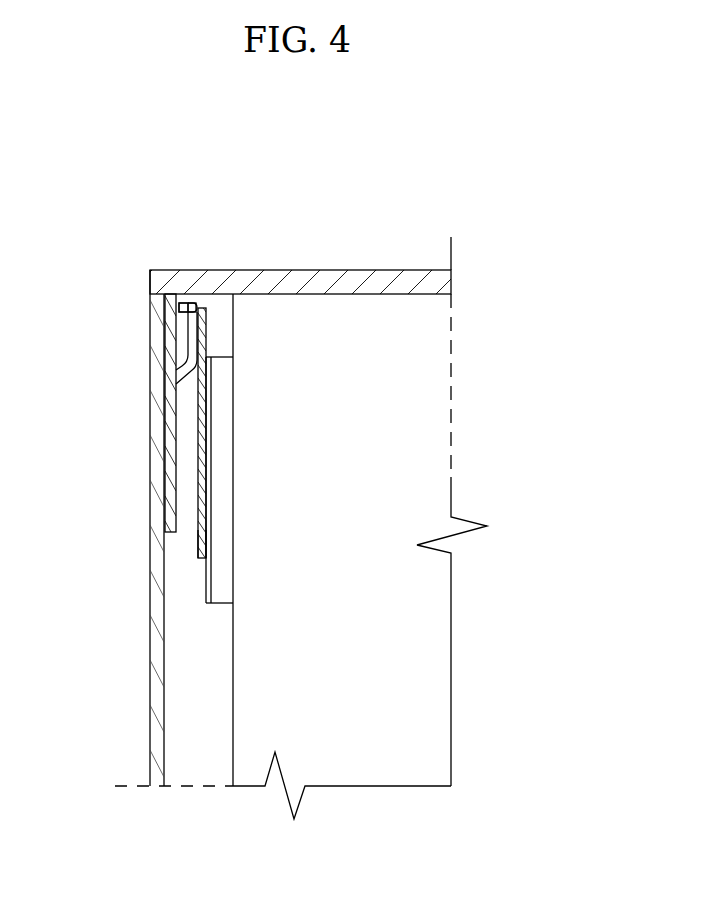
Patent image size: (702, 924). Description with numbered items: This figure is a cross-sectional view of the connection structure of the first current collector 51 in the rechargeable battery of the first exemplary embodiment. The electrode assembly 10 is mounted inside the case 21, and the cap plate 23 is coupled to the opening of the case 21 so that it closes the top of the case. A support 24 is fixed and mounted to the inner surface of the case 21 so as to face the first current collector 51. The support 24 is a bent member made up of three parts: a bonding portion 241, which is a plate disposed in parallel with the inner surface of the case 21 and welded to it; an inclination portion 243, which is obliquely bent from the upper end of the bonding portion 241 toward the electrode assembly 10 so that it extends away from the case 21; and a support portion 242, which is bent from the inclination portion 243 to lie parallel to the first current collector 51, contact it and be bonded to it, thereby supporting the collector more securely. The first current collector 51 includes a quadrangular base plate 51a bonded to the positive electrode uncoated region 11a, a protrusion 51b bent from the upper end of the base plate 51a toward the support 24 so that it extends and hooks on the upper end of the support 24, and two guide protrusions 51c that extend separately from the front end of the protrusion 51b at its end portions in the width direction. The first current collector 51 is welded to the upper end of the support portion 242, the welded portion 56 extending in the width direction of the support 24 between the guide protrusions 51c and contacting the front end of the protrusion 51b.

The electrode assembly 10 is at (412, 466).
The positive electrode uncoated region 11a is at (213, 387).
The case 21 is at (160, 633).
The cap plate 23 is at (369, 283).
The support 24 is at (128, 417).
The bonding portion 241 is at (165, 478).
The support portion 242 is at (190, 327).
The inclination portion 243 is at (188, 360).
The first current collector 51 is at (210, 298).
The base plate 51a is at (201, 543).
The protrusion 51b is at (203, 303).
The guide protrusion 51c is at (184, 305).
The welded portion 56 is at (180, 307).